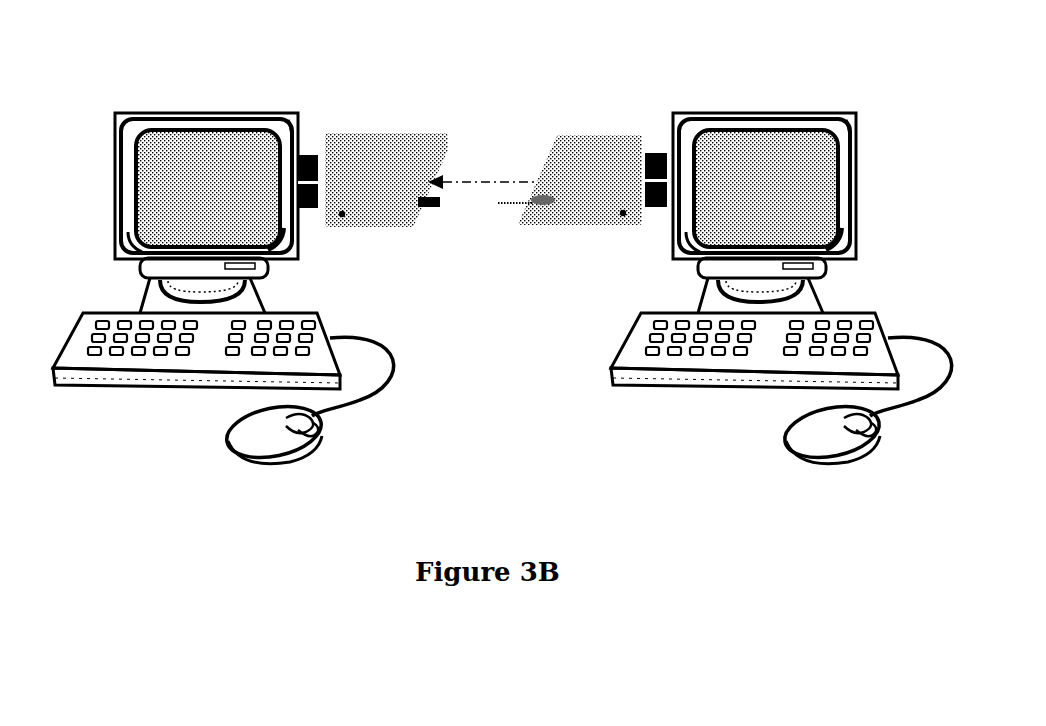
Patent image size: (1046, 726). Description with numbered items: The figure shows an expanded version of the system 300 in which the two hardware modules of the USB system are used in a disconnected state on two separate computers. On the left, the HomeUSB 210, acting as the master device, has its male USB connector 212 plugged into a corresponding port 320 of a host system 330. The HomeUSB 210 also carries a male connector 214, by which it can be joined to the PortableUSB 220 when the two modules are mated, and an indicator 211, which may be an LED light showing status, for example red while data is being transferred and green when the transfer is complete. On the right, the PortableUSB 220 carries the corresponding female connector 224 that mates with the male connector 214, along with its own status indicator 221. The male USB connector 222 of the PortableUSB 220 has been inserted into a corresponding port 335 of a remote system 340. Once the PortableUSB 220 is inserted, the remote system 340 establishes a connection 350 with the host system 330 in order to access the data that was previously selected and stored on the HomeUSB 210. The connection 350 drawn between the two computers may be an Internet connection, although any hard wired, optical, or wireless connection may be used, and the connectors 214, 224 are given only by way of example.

The HomeUSB 210 is at (367, 135).
The indicator 211 is at (345, 216).
The male USB connector 212 is at (312, 155).
The male connector 214 is at (432, 210).
The PortableUSB 220 is at (598, 132).
The indicator 221 is at (620, 215).
The male USB connector 222 is at (650, 153).
The female connector 224 is at (538, 202).
The system 300 is at (172, 453).
The port 320 is at (300, 215).
The host system 330 is at (300, 272).
The port 335 is at (668, 207).
The remote system 340 is at (670, 248).
The connection 350 is at (468, 180).